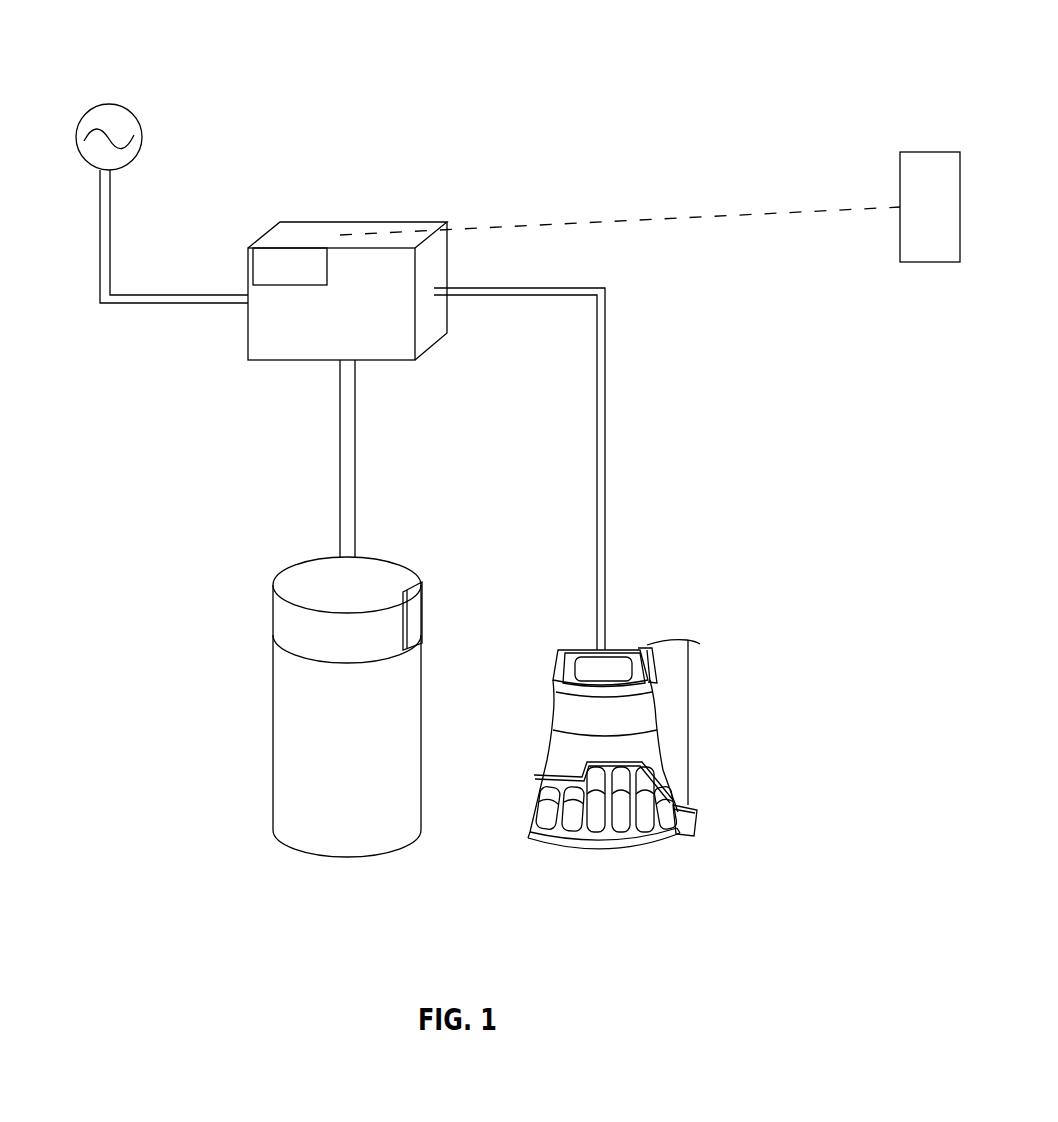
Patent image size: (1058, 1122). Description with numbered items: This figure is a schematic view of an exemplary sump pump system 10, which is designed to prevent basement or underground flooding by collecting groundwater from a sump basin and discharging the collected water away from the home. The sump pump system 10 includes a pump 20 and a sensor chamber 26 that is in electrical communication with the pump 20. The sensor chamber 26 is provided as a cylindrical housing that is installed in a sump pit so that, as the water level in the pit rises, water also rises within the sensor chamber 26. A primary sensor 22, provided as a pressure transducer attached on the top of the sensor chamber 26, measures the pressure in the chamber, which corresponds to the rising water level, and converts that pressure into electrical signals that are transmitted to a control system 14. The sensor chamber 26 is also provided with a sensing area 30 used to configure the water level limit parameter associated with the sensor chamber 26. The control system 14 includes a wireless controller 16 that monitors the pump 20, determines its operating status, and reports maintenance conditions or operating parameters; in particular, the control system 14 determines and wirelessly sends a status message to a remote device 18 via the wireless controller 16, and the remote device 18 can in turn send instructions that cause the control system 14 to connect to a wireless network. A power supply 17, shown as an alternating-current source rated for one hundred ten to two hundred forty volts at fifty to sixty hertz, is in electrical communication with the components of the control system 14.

The sump pump system 10 is at (134, 44).
The control system 14 is at (433, 270).
The wireless controller 16 is at (296, 247).
The power supply 17 is at (97, 107).
The remote device 18 is at (930, 152).
The pump 20 is at (653, 750).
The primary sensor 22 is at (300, 562).
The sensor chamber 26 is at (378, 835).
The sensing area 30 is at (415, 617).